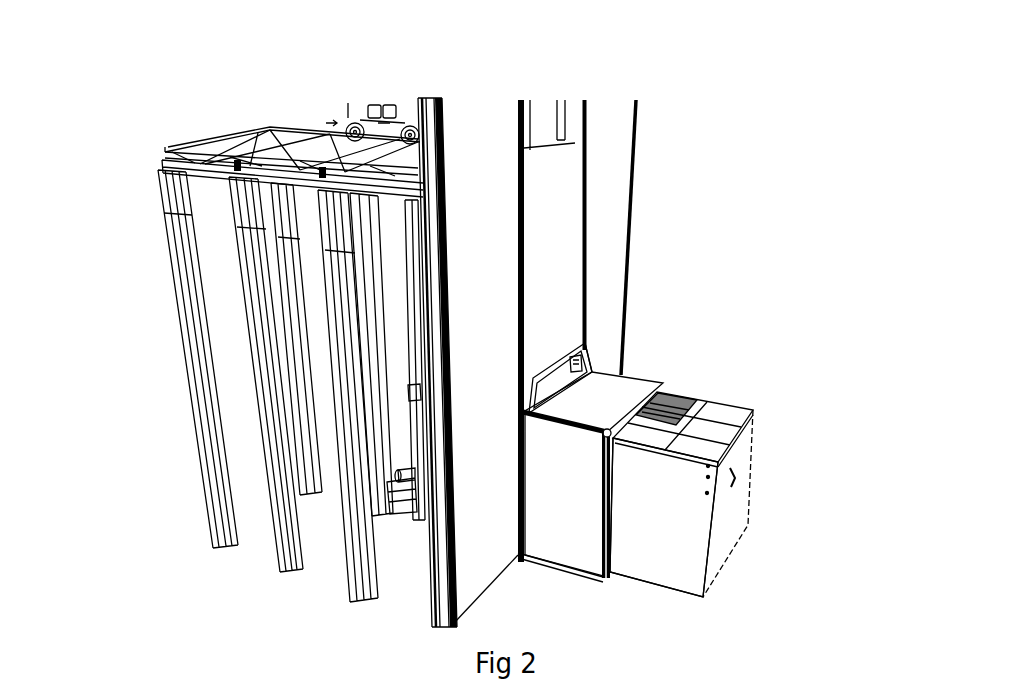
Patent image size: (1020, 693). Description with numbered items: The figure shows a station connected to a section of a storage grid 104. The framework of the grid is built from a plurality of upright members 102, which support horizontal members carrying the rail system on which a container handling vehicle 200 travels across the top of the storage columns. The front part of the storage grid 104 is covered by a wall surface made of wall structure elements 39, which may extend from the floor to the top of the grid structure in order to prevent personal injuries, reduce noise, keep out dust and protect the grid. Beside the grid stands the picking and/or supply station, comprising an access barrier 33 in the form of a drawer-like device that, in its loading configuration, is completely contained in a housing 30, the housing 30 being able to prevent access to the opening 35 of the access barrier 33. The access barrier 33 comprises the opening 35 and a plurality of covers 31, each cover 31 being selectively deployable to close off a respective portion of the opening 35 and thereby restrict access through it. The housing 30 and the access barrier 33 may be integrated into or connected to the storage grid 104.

The upright members 102 is at (190, 335).
The storage grid 104 is at (167, 156).
The container handling vehicle 200 is at (368, 115).
The wall structure elements 39 is at (608, 242).
The housing 30 is at (583, 395).
The opening 35 is at (698, 398).
The covers 31 is at (750, 447).
The access barrier 33 is at (727, 520).